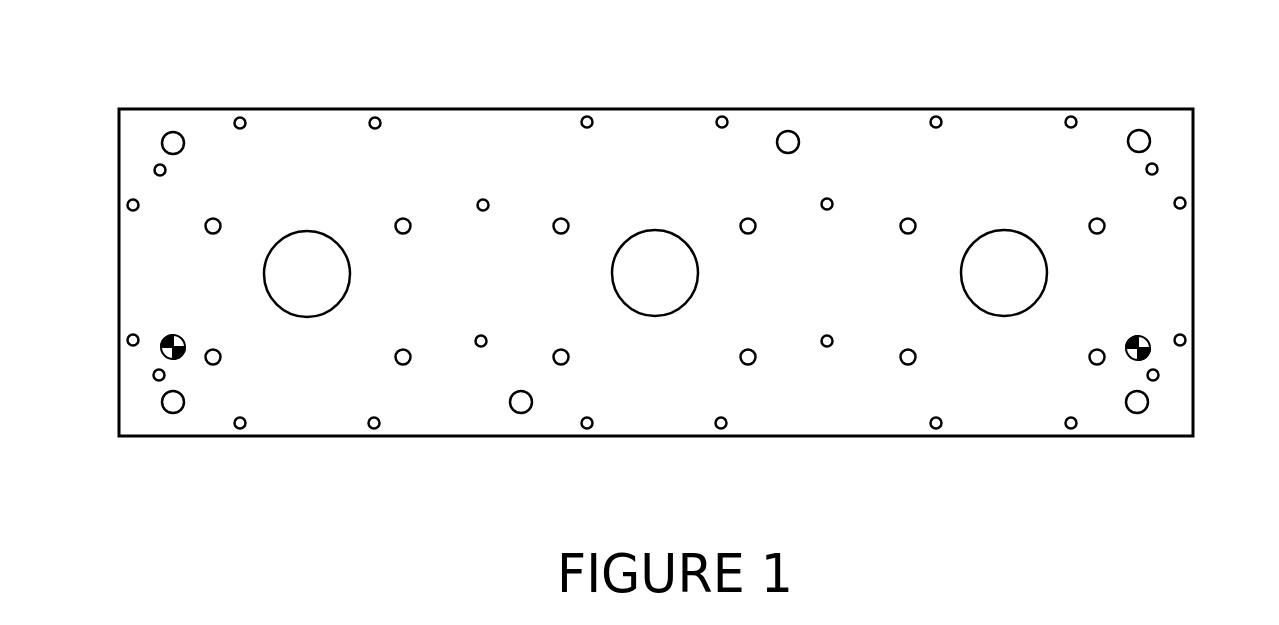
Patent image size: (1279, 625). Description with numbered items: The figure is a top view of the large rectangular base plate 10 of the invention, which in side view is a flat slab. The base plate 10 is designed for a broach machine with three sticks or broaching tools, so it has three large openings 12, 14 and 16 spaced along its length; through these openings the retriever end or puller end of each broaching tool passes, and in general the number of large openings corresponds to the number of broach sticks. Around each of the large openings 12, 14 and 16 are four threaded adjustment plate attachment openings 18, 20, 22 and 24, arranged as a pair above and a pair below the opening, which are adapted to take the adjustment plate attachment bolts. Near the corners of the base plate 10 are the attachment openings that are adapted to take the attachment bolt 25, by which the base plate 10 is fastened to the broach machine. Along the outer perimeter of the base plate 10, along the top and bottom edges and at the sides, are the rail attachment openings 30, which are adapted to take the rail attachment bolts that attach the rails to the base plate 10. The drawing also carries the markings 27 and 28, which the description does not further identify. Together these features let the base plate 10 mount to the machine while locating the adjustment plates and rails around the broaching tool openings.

The base plate 10 is at (312, 378).
The large opening 12 is at (265, 275).
The large opening 14 is at (613, 273).
The large opening 16 is at (962, 273).
The adjustment plate attachment opening 18 is at (410, 224).
The adjustment plate attachment opening 20 is at (408, 352).
The adjustment plate attachment opening 22 is at (220, 355).
The adjustment plate attachment opening 24 is at (220, 224).
The attachment bolt 25 is at (157, 164).
The alignment target mark 27 is at (168, 358).
The medium hole 28 is at (172, 132).
The rail attachment opening 30 is at (238, 117).